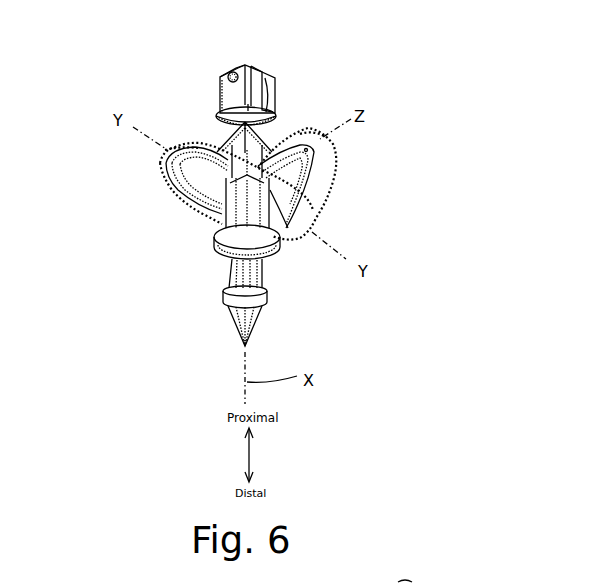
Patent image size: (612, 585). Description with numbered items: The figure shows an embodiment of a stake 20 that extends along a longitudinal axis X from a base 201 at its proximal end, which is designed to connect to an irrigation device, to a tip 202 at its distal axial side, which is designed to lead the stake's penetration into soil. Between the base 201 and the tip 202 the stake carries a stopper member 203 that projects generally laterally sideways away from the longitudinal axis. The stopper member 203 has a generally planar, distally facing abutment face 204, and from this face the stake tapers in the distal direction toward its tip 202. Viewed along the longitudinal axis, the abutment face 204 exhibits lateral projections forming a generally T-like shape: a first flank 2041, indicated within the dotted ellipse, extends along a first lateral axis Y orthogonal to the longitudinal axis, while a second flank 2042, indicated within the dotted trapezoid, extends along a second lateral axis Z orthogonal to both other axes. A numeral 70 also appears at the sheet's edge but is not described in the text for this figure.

The stake 20 is at (396, 118).
The base 201 is at (197, 58).
The tip 202 is at (226, 353).
The stopper member 203 is at (156, 173).
The abutment face 204 is at (208, 190).
The first flank 2041 is at (186, 145).
The second flank 2042 is at (308, 130).
The element 70 is at (478, 584).